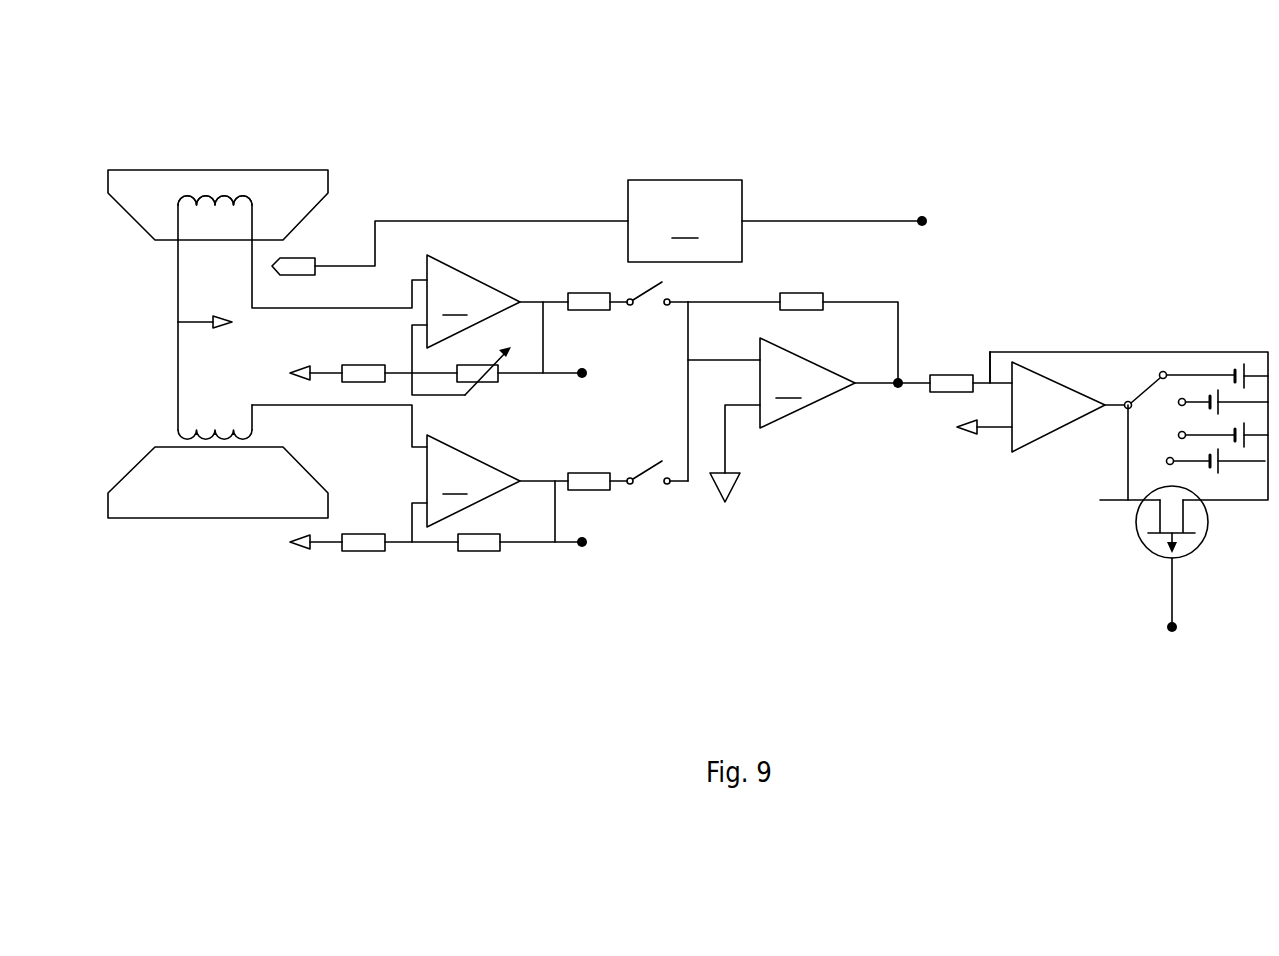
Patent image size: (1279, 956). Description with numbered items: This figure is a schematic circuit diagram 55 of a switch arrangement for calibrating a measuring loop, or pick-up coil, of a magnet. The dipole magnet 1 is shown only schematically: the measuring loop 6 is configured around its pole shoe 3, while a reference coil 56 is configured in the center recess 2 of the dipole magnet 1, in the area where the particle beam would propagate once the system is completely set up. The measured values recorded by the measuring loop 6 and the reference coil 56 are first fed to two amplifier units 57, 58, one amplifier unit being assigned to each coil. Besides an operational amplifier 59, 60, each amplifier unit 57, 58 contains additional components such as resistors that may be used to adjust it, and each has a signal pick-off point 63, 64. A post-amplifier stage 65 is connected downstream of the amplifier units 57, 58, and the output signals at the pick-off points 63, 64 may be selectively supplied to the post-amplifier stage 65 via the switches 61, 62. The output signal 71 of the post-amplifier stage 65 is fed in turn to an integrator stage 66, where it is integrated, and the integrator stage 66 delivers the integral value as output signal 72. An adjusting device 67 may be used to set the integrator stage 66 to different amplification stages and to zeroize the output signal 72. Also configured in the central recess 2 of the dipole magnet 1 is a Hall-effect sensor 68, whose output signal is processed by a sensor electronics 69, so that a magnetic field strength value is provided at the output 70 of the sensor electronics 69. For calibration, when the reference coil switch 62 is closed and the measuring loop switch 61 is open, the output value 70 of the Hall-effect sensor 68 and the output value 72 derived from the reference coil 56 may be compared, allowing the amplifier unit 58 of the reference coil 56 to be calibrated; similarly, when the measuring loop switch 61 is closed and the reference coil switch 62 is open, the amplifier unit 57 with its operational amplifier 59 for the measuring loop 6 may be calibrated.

The dipole magnet 1 is at (231, 142).
The center recess 2 is at (163, 322).
The pole shoe 3 is at (277, 182).
The measuring loop 6 is at (172, 219).
The schematic circuit diagram 55 is at (1140, 178).
The reference coil 56 is at (178, 436).
The amplifier unit 57 is at (500, 269).
The amplifier unit 58 is at (509, 506).
The operational amplifier 59 is at (490, 325).
The operational amplifier 60 is at (410, 473).
The measuring loop switch 61 is at (648, 302).
The reference coil switch 62 is at (648, 482).
The signal pick-off point 63 is at (586, 377).
The signal pick-off point 64 is at (586, 546).
The post-amplifier stage 65 is at (809, 397).
The integrator stage 66 is at (1137, 316).
The adjusting device 67 is at (1194, 352).
The Hall-effect sensor 68 is at (300, 260).
The sensor electronics 69 is at (775, 221).
The output 70 is at (926, 216).
The output signal 71 is at (898, 389).
The output signal 72 is at (1177, 630).